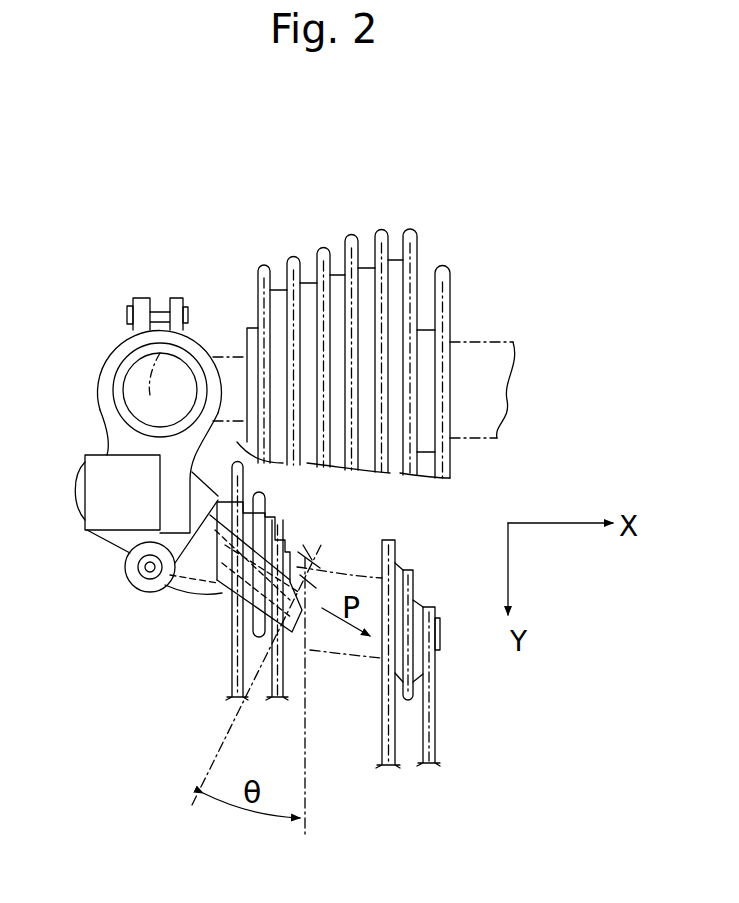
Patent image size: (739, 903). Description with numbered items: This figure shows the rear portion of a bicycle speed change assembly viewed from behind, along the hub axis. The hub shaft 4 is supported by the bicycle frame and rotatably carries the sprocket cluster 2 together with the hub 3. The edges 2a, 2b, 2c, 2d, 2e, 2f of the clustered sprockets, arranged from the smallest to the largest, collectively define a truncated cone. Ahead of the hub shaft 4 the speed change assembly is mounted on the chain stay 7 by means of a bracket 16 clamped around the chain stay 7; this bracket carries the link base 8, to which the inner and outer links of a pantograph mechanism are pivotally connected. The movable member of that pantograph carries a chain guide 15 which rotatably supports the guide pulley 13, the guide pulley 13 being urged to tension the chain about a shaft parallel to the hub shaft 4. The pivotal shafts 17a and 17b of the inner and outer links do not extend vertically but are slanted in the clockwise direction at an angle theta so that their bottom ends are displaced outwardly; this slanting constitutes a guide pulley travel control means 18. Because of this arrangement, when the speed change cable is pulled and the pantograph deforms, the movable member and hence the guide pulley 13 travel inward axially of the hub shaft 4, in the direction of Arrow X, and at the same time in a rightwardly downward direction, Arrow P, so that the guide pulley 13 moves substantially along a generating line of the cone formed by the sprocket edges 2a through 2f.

The sprocket cluster 2 is at (348, 203).
The clustered sprocket edge 2a is at (258, 262).
The clustered sprocket edge 2b is at (292, 254).
The clustered sprocket edge 2c is at (323, 246).
The clustered sprocket edge 2d is at (352, 232).
The clustered sprocket edge 2e is at (383, 230).
The clustered sprocket edge 2f is at (413, 231).
The hub 3 is at (500, 324).
The hub shaft 4 is at (238, 360).
The chain stay 7 is at (152, 378).
The link base 8 is at (105, 503).
The guide pulley 13 is at (232, 663).
The chain guide 15 is at (232, 629).
The bracket 16 is at (100, 372).
The pivotal shaft 17a is at (306, 562).
The pivotal shaft 17b is at (287, 689).
The guide pulley travel control means 18 is at (342, 756).